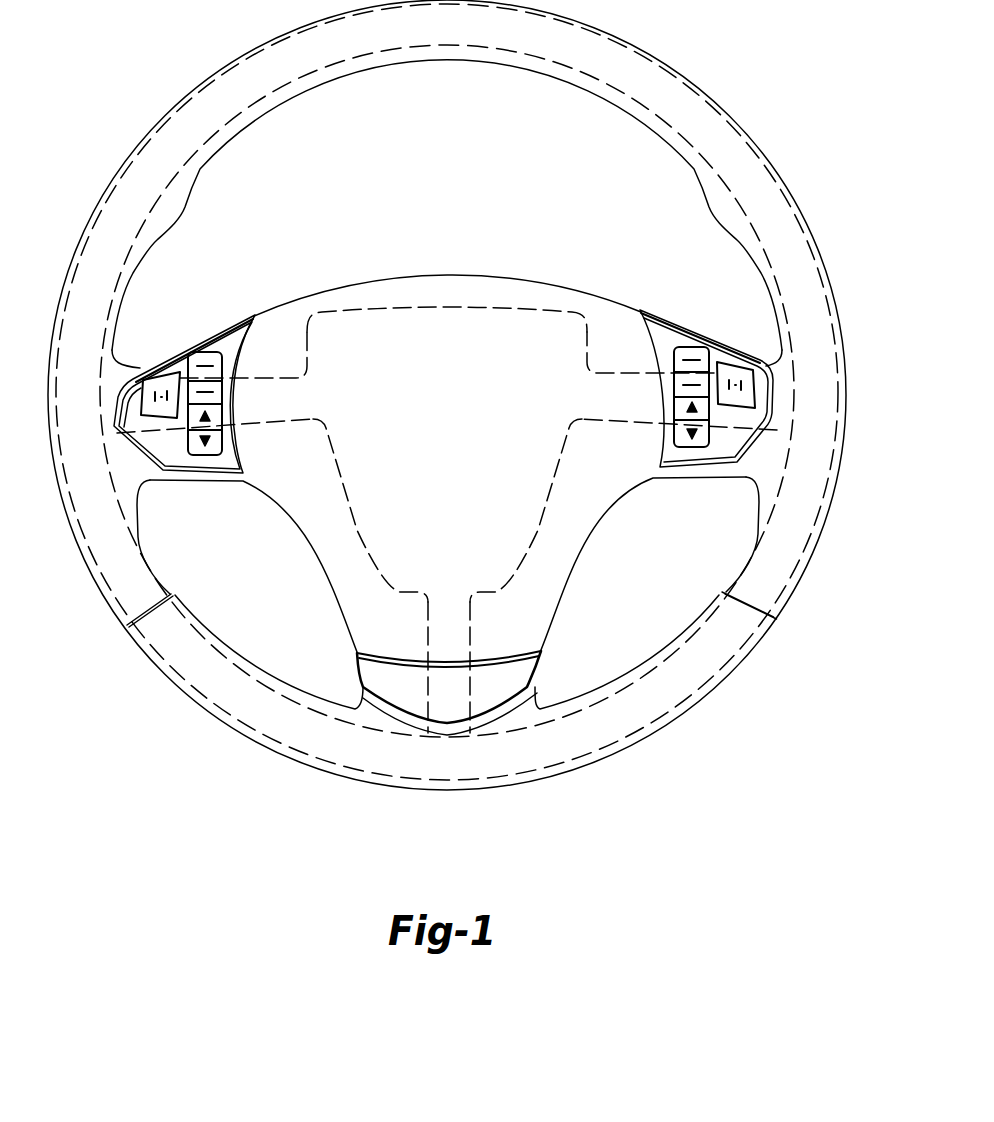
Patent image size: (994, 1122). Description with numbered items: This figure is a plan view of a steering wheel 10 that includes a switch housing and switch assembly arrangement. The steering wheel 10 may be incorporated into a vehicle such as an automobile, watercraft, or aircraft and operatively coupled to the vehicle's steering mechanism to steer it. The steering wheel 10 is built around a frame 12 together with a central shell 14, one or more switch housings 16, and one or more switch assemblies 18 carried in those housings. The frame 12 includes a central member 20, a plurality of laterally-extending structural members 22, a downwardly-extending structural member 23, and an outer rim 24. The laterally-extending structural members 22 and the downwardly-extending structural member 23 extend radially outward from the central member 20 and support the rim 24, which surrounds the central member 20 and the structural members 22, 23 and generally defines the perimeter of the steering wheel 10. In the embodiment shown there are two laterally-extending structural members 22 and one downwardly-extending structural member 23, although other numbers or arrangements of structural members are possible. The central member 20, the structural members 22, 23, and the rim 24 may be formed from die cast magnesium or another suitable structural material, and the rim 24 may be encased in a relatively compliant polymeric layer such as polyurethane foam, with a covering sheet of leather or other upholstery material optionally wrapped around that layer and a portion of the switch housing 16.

The steering wheel 10 is at (678, 45).
The frame 12 is at (520, 303).
The central shell 14 is at (418, 266).
The switch housing 16 is at (189, 330).
The switch assembly 18 is at (177, 461).
The central member 20 is at (458, 310).
The laterally-extending structural member 22 is at (292, 372).
The downwardly-extending structural member 23 is at (478, 640).
The outer rim 24 is at (719, 106).